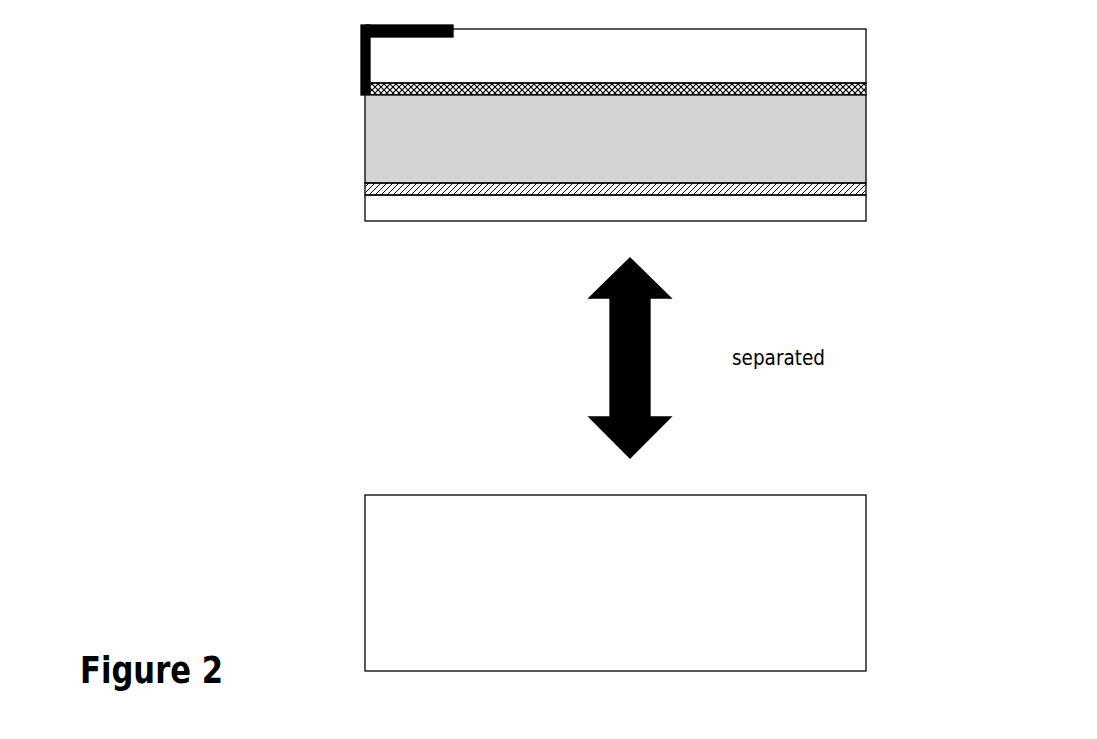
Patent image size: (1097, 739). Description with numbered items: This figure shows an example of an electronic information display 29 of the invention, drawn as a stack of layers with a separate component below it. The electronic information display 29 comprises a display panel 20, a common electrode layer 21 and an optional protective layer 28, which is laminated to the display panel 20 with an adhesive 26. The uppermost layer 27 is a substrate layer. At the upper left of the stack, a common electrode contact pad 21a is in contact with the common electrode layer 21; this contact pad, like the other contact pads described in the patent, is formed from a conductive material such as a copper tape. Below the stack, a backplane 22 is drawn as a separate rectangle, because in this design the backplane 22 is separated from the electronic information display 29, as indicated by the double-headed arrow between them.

The display panel 20 is at (867, 143).
The common electrode layer 21 is at (867, 94).
The common electrode contact pad 21a is at (362, 44).
The backplane 22 is at (867, 583).
The adhesive 26 is at (867, 182).
The substrate layer 27 is at (867, 46).
The protective layer 28 is at (667, 219).
The electronic information display 29 is at (722, 125).